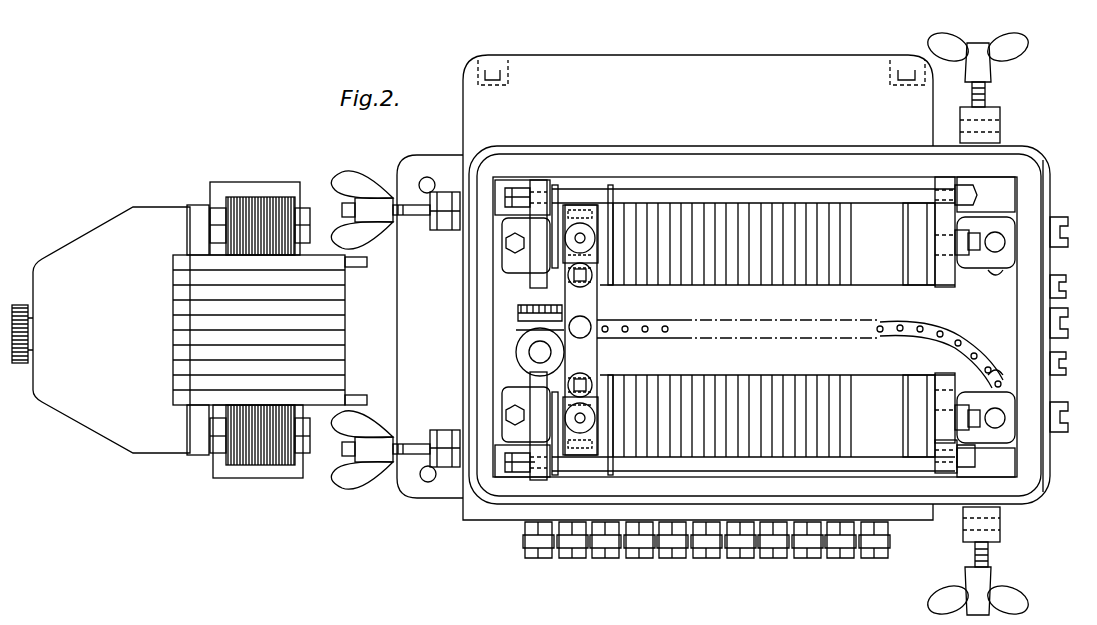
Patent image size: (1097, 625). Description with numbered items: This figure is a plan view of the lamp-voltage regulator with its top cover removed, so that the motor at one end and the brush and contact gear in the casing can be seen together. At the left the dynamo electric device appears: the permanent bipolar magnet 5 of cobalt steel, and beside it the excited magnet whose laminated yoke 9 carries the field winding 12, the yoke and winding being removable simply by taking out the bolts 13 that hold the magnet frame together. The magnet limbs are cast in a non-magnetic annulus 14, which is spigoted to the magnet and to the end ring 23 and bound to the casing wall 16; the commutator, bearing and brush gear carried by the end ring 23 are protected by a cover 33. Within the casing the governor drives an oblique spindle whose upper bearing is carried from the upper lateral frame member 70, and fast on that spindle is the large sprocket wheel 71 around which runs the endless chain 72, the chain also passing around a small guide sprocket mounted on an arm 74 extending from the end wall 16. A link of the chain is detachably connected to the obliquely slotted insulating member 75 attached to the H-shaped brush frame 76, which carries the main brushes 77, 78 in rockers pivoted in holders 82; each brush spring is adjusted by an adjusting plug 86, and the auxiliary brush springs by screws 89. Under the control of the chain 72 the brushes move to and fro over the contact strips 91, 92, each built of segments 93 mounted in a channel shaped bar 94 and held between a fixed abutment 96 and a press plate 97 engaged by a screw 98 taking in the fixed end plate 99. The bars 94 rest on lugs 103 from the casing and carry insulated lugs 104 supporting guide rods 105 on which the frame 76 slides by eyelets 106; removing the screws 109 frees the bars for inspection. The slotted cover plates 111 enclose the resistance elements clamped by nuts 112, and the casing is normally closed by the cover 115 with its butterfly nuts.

The permanent bipolar magnet 5 is at (430, 326).
The laminated yoke 9 is at (243, 194).
The field winding 12 is at (270, 330).
The bolts 13 is at (344, 450).
The annulus 14 is at (265, 475).
The casing wall 16 is at (443, 470).
The end ring 23 is at (198, 330).
The cover 33 is at (101, 330).
The upper lateral frame member 70 is at (757, 491).
The sprocket wheel 71 is at (900, 354).
The endless chain 72 is at (688, 322).
The arm 74 is at (516, 359).
The insulating member 75 is at (610, 360).
The brush frame 76 is at (595, 320).
The main brush 77 is at (632, 378).
The main brush 78 is at (630, 208).
The holder 82 is at (580, 474).
The adjusting plug 86 is at (618, 418).
The screws 89 is at (607, 368).
The contact strip 91 is at (692, 447).
The contact strip 92 is at (777, 208).
The segments 93 is at (762, 360).
The channel shaped bar 94 is at (995, 439).
The fixed abutment 96 is at (535, 375).
The press plate 97 is at (913, 376).
The screw 98 is at (980, 403).
The fixed end plate 99 is at (943, 376).
The lugs 103 is at (475, 415).
The lugs 104 is at (945, 473).
The guide rods 105 is at (723, 472).
The eyelets 106 is at (610, 472).
The screws 109 is at (1008, 410).
The cover plates 111 is at (698, 287).
The nuts 112 is at (730, 552).
The cover 115 is at (1008, 572).